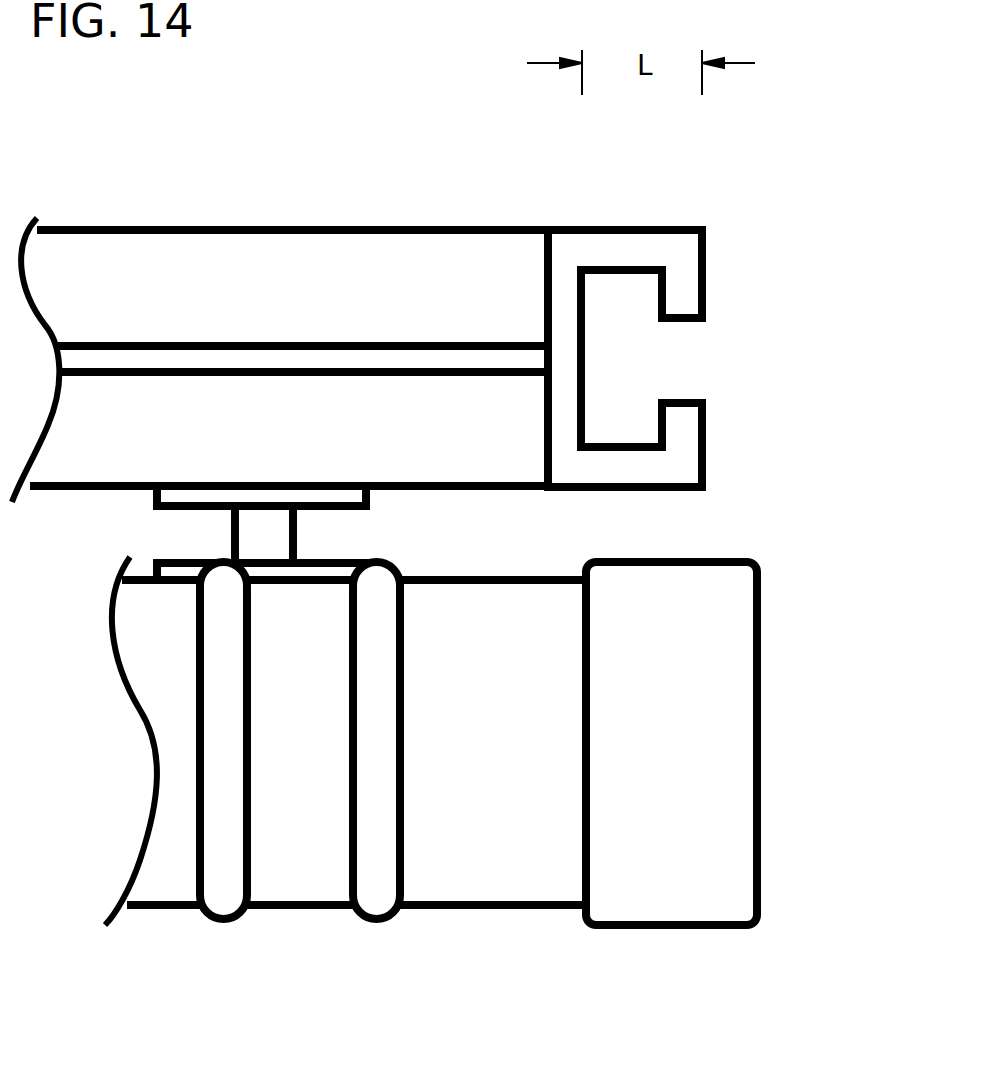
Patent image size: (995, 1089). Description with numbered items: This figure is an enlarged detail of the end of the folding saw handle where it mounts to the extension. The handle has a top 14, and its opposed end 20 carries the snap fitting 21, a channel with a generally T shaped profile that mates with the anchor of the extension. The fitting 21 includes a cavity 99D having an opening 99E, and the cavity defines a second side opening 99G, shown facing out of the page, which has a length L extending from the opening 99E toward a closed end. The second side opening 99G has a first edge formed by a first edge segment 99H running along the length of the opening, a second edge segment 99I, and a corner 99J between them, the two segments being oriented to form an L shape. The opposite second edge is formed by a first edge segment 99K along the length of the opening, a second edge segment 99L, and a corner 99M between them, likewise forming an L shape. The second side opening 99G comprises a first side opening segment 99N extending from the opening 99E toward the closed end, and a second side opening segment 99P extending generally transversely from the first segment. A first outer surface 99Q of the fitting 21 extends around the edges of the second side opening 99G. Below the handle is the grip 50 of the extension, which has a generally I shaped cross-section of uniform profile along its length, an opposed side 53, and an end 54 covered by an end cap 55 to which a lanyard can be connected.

The top 14 is at (202, 280).
The opposed end 20 is at (433, 278).
The snap fitting 21 is at (712, 325).
The first outer surface 99Q is at (545, 255).
The corner 99J is at (640, 318).
The second edge segment 99I is at (650, 290).
The first edge segment 99H is at (683, 320).
The first side opening segment 99N is at (680, 363).
The corner 99M is at (658, 402).
The first edge segment 99K is at (695, 403).
The opening 99E is at (703, 404).
The second edge segment 99L is at (658, 424).
The second side opening segment 99P is at (620, 357).
The cavity 99D is at (583, 400).
The second side opening 99G is at (640, 453).
The grip 50 is at (475, 907).
The opposed side 53 is at (160, 907).
The end 54 is at (762, 733).
The end cap 55 is at (762, 873).